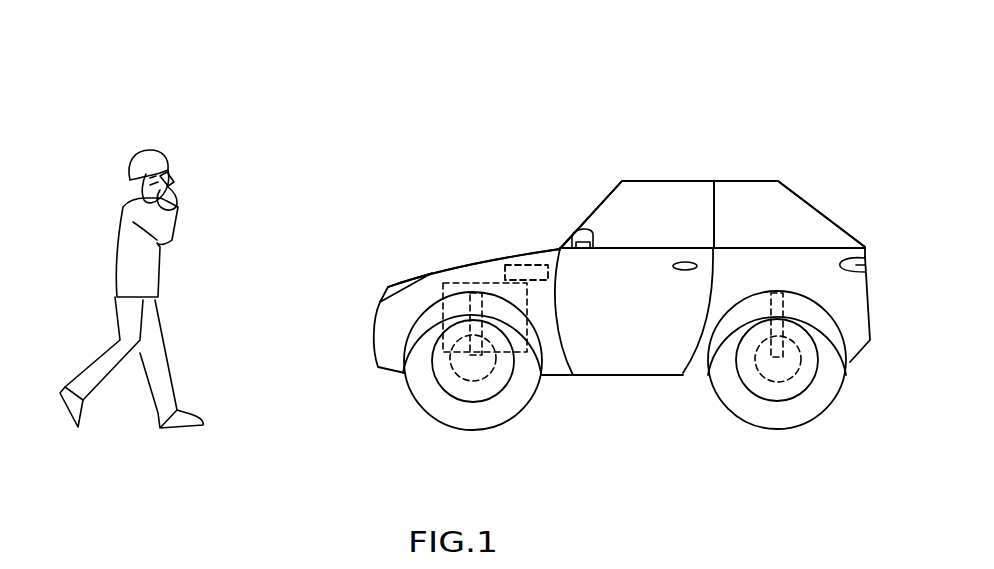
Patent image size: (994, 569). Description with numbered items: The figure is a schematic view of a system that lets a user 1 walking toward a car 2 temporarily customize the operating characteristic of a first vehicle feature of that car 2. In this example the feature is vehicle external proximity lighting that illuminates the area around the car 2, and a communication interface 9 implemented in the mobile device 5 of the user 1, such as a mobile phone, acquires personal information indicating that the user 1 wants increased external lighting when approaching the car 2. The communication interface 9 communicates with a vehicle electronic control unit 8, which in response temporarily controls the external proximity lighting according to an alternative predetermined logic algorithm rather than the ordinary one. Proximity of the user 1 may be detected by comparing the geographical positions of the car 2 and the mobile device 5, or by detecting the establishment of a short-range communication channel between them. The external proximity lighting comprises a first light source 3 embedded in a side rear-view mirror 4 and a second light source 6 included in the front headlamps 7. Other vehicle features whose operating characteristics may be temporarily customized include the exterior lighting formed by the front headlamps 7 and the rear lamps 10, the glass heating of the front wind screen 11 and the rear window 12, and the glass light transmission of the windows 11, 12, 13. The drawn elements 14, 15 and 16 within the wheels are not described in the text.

The user 1 is at (130, 240).
The car 2 is at (817, 73).
The first light source 3 is at (570, 243).
The side rear-view mirror 4 is at (578, 241).
The mobile device 5 is at (167, 172).
The communication interface 9 is at (167, 198).
The second light source 6 is at (387, 290).
The front headlamps 7 is at (410, 273).
The electronic control unit 8 is at (528, 263).
The rear lamps 10 is at (866, 259).
The front wind screen 11 is at (600, 190).
The rear window 12 is at (806, 197).
The window 13 is at (673, 215).
The actuator 14 is at (477, 300).
The drive unit 15 is at (443, 317).
The wheel hub / motor 16 is at (460, 368).